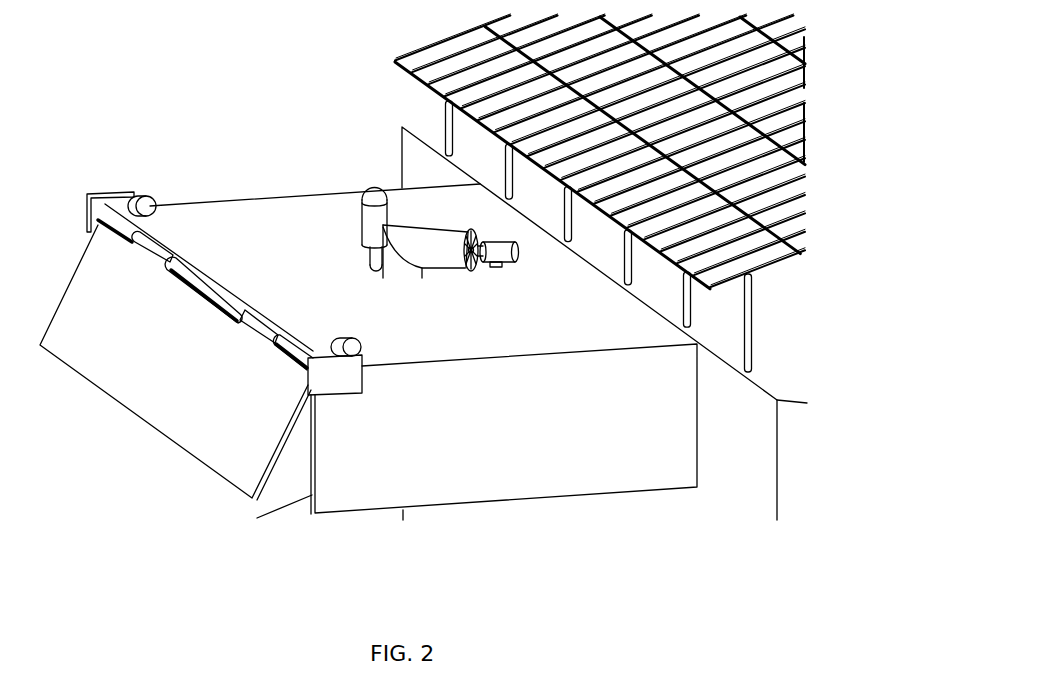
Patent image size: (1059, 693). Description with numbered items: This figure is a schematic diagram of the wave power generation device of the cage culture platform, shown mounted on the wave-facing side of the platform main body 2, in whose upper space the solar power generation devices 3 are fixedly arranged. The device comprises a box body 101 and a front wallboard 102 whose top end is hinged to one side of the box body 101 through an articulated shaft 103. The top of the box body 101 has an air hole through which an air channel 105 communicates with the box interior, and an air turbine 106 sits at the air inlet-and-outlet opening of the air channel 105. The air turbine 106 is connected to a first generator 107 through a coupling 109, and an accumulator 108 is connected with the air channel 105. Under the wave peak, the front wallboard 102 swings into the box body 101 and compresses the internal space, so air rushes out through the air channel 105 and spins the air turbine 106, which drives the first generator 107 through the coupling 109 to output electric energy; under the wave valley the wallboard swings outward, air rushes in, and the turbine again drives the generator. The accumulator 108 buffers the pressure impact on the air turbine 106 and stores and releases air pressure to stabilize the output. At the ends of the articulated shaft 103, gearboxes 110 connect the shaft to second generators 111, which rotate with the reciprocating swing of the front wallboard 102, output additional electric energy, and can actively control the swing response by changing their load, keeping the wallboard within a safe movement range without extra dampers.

The platform main body 2 is at (422, 163).
The solar power generation devices 3 is at (662, 245).
The box body 101 is at (197, 220).
The front wallboard 102 is at (88, 290).
The articulated shaft 103 is at (210, 288).
The air channel 105 is at (406, 248).
The air turbine 106 is at (462, 258).
The first generator 107 is at (498, 250).
The accumulator 108 is at (370, 217).
The coupling 109 is at (472, 263).
The gearbox 110 is at (96, 207).
The second generator 111 is at (143, 205).